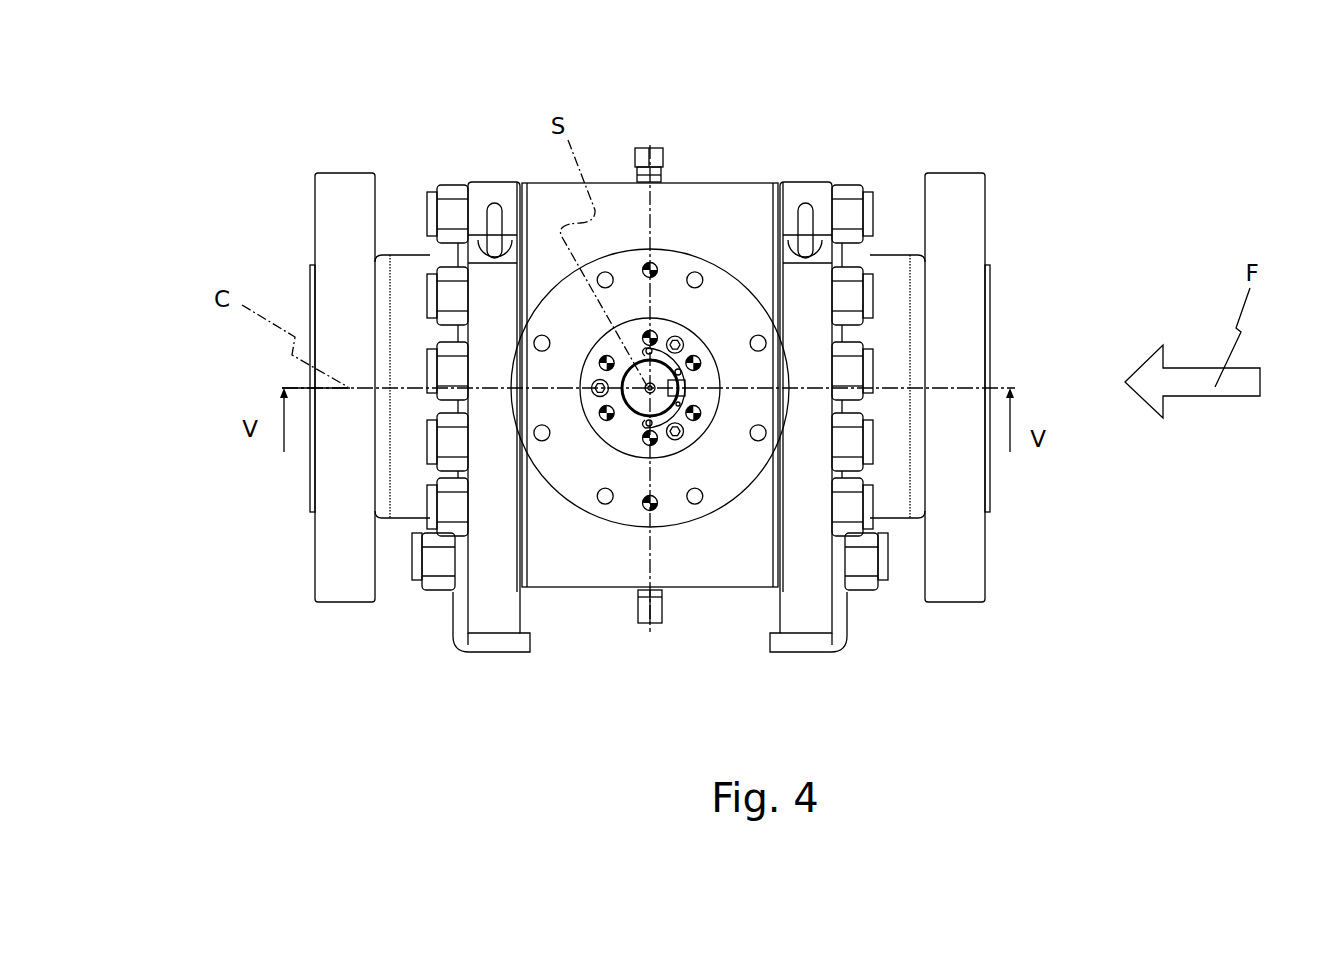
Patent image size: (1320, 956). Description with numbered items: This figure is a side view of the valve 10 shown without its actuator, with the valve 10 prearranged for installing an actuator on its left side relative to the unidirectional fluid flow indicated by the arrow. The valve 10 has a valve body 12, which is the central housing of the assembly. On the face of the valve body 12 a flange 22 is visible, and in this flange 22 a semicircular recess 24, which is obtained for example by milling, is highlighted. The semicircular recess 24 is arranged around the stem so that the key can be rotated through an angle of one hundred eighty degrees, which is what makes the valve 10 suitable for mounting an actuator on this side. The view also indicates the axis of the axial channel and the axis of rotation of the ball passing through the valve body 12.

The valve 10 is at (293, 226).
The valve body 12 is at (710, 218).
The flange 22 is at (578, 480).
The semicircular recess 24 is at (680, 417).